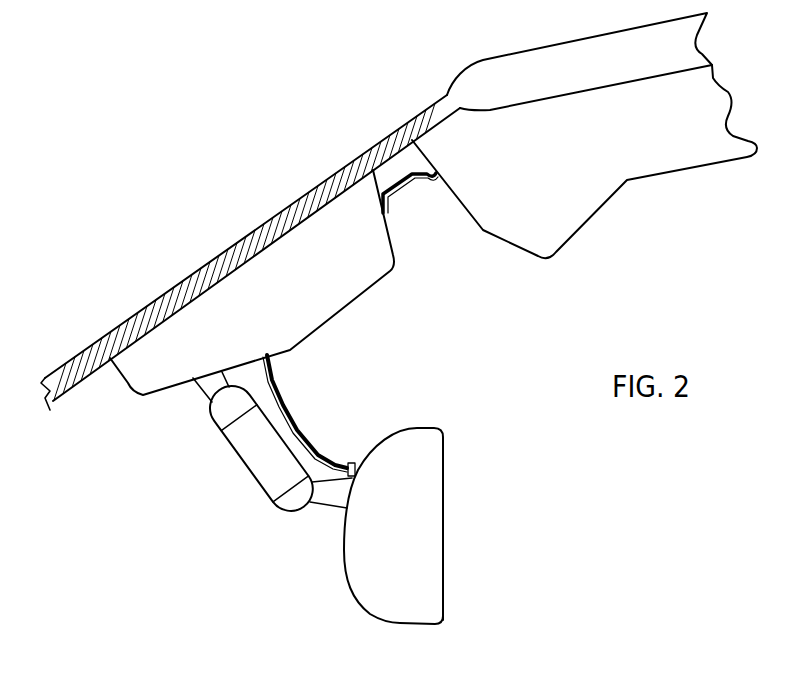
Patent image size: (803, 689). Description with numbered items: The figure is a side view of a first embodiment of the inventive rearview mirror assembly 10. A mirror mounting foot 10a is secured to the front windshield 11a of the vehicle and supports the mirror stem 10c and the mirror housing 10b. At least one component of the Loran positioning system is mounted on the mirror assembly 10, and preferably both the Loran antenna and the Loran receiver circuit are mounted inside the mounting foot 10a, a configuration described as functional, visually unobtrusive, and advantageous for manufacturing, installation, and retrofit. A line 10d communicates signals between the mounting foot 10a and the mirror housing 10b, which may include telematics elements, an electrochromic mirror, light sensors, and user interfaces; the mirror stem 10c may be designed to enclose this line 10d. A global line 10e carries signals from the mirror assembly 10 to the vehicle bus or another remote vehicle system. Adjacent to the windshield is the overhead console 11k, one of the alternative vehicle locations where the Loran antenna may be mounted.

The rearview mirror assembly 10 is at (622, 537).
The mounting foot 10a is at (383, 279).
The mirror housing 10b is at (368, 601).
The mirror stem 10c is at (248, 458).
The line 10d is at (298, 418).
The global line 10e is at (395, 208).
The front windshield 11a is at (153, 318).
The overhead console 11k is at (585, 225).